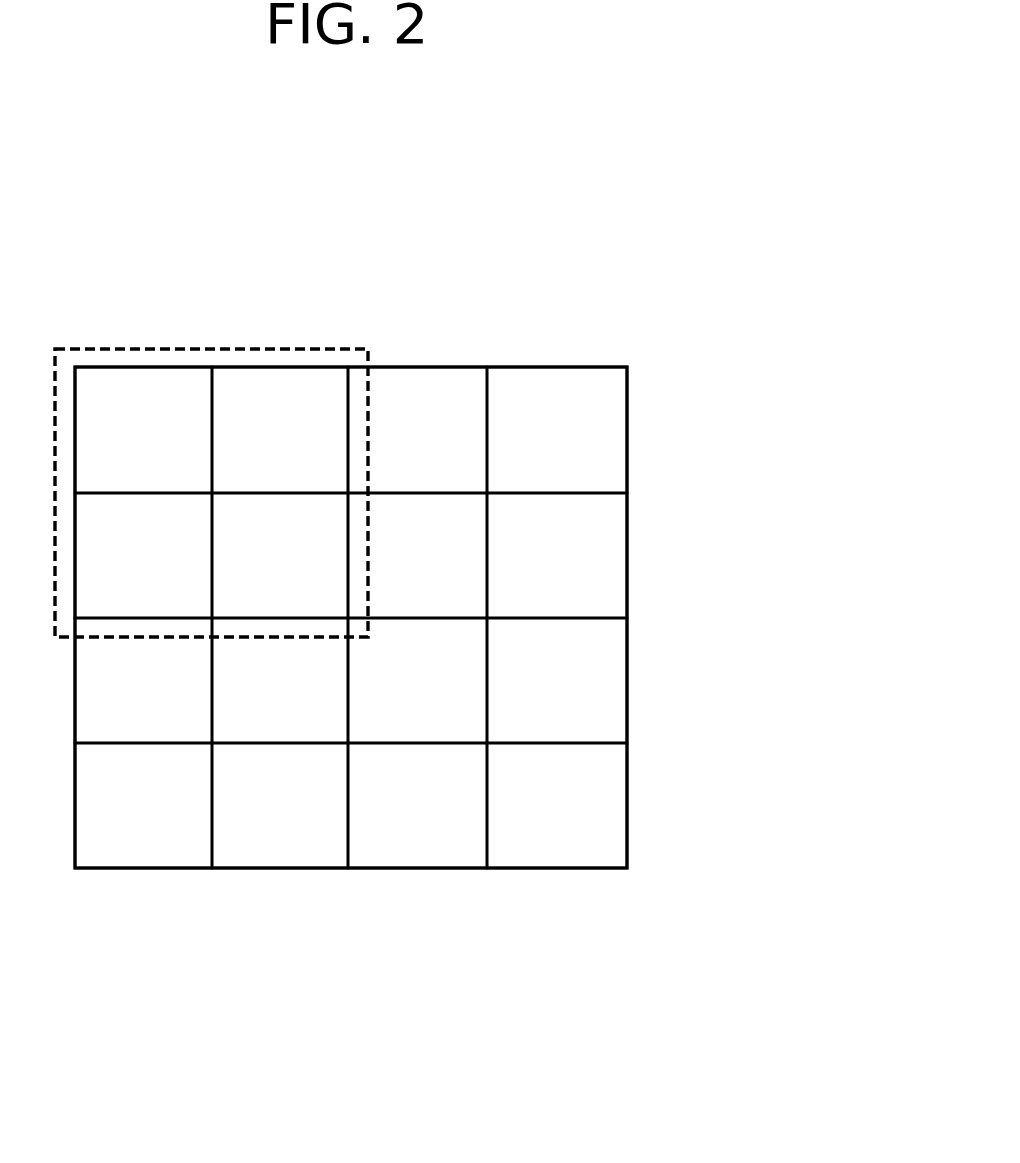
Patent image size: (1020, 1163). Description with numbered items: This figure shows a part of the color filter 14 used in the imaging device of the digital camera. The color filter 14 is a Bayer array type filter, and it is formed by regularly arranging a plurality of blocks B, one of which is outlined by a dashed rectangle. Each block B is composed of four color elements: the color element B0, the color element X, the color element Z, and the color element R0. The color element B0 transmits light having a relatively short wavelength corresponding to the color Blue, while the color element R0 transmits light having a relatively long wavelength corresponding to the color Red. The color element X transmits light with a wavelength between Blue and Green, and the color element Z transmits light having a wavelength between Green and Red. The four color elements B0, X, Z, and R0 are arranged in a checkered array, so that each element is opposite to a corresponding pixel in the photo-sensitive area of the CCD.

The color filter 14 is at (492, 667).
The block B is at (164, 347).
The color element B0 is at (281, 555).
The color element X is at (419, 555).
The color element Z is at (281, 680).
The color element R0 is at (419, 680).